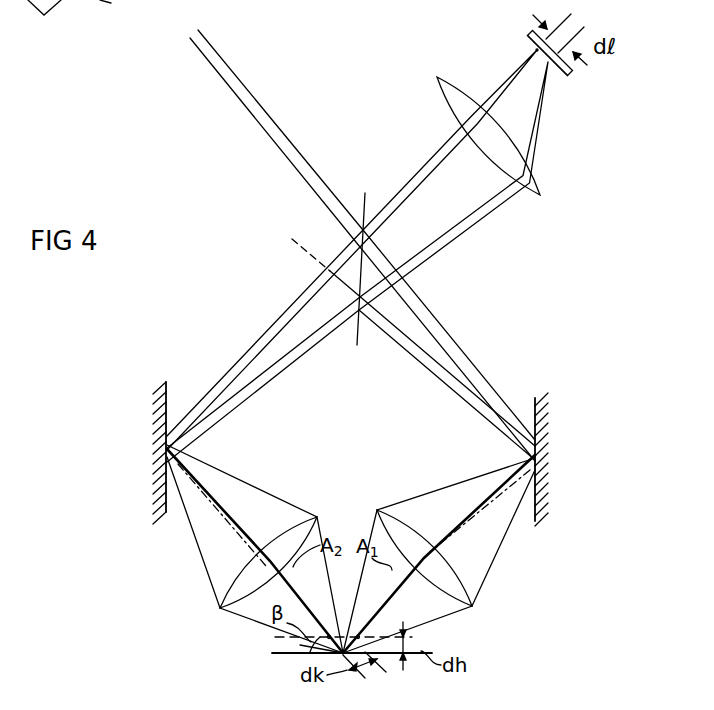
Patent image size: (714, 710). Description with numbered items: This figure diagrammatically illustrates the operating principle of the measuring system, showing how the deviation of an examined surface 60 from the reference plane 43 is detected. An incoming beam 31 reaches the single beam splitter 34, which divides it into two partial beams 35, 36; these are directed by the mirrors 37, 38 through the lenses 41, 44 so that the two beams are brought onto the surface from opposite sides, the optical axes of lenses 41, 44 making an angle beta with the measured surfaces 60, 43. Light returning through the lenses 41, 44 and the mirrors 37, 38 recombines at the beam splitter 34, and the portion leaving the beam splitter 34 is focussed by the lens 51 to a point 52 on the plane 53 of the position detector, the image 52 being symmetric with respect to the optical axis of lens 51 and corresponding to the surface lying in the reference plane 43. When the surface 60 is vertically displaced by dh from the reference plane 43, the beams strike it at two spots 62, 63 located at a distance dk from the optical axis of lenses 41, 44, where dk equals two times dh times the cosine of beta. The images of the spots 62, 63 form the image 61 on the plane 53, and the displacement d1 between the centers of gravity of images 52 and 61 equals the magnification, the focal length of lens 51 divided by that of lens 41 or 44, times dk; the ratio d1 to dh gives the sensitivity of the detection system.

The incident light beam 31 is at (294, 152).
The beam splitter 34 is at (362, 200).
The first partial beam 35 is at (461, 352).
The second partial beam 36 is at (258, 347).
The first mirror 37 is at (547, 420).
The second mirror 38 is at (152, 420).
The lens 41 is at (304, 515).
The reference plane 43 is at (272, 653).
The lens 44 is at (401, 517).
The lens 51 is at (456, 108).
The point 52 is at (535, 49).
The plane of the detector 53 is at (530, 37).
The examined surface 60 is at (425, 635).
The image 61 is at (556, 66).
The spot 62 is at (359, 634).
The spot 63 is at (329, 634).